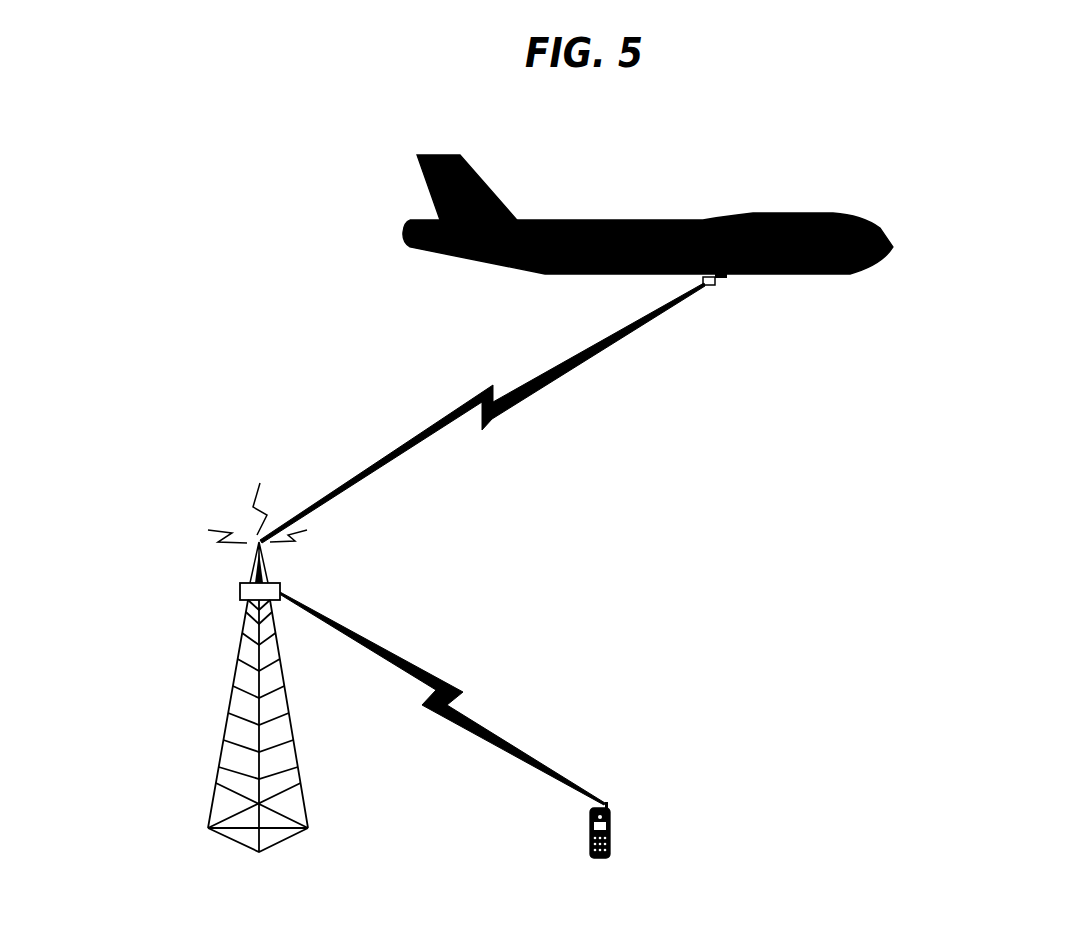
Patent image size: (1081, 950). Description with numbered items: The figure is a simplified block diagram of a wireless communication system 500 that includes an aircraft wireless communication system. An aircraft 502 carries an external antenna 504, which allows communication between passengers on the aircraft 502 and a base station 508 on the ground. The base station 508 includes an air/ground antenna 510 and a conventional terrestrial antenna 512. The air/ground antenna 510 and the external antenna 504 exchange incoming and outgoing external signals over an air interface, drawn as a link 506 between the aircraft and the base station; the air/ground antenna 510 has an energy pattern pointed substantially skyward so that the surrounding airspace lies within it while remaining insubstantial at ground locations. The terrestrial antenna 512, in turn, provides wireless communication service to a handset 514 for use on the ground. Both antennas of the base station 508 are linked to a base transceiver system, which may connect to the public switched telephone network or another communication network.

The wireless communication system 500 is at (988, 127).
The aircraft 502 is at (703, 220).
The external antenna 504 is at (712, 286).
The wireless link 506 is at (497, 420).
The base station 508 is at (237, 697).
The air/ground antenna 510 is at (255, 542).
The terrestrial antenna 512 is at (283, 592).
The handset 514 is at (612, 832).